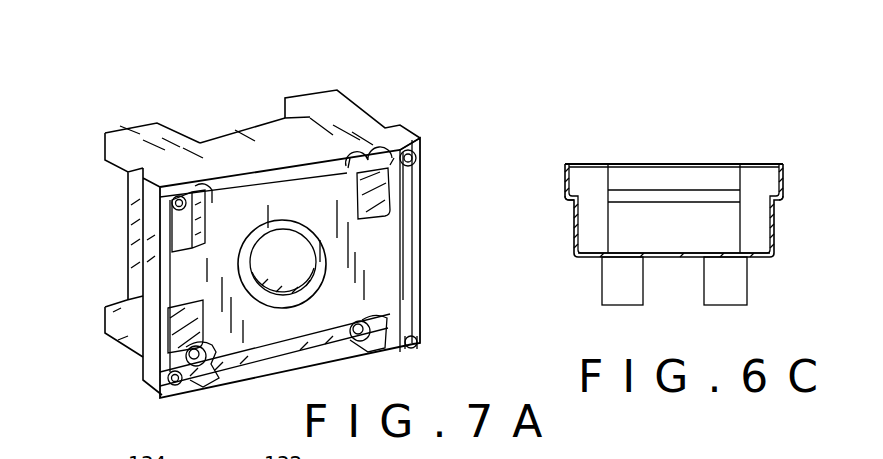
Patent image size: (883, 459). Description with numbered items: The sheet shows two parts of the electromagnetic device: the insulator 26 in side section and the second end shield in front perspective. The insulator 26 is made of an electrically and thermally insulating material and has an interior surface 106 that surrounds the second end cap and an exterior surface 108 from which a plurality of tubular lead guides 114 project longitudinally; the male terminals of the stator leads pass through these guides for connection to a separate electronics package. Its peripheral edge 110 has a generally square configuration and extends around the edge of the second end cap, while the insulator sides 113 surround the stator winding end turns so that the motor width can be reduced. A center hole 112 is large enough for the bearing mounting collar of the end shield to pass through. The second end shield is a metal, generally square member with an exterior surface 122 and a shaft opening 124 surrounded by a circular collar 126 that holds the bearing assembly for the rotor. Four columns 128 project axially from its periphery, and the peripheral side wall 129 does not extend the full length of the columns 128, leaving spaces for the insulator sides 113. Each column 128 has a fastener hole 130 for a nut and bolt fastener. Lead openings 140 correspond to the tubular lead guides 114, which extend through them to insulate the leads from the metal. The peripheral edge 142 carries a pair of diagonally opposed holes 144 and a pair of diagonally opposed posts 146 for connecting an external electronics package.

In FIG. 6C, the insulator 26 is at (773, 232).
In FIG. 6C, the interior surface 106 is at (780, 180).
In FIG. 6C, the exterior surface 108 is at (776, 203).
In FIG. 6C, the peripheral edge 110 is at (565, 164).
In FIG. 6C, the center hole 112 is at (672, 260).
In FIG. 6C, the insulator sides 113 is at (783, 172).
In FIG. 6C, the tubular lead guides 114 is at (617, 278).
In FIG. 7A, the exterior surface 122 is at (383, 262).
In FIG. 7A, the shaft opening 124 is at (272, 245).
In FIG. 7A, the circular collar 126 is at (294, 266).
In FIG. 7A, the columns 128 is at (118, 165).
In FIG. 7A, the peripheral side wall 129 is at (277, 140).
In FIG. 7A, the fastener hole 130 is at (362, 320).
In FIG. 7A, the lead openings 140 is at (182, 226).
In FIG. 7A, the peripheral edge 142 is at (395, 140).
In FIG. 7A, the holes 144 is at (418, 162).
In FIG. 7A, the posts 146 is at (180, 196).